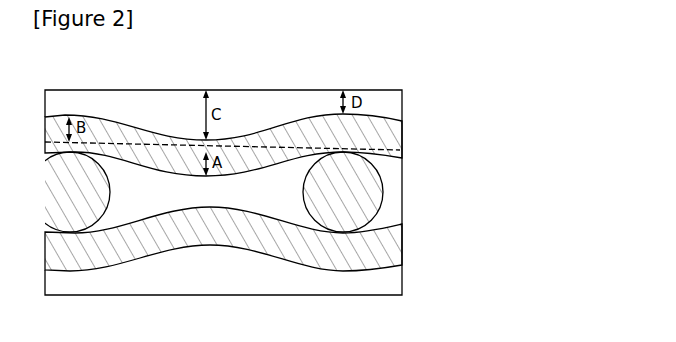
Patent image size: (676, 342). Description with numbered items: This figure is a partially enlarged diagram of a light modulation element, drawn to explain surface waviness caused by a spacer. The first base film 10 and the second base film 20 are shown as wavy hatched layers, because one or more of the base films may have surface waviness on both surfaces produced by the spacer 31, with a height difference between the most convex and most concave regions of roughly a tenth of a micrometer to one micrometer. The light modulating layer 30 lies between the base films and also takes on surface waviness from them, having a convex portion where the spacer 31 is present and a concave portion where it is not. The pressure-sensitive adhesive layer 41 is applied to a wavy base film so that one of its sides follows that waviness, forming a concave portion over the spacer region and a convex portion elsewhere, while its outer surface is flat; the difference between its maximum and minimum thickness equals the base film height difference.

The first base film 10 is at (400, 233).
The second base film 20 is at (400, 139).
The light modulating layer 30 is at (398, 200).
The spacer 31 is at (383, 172).
The pressure-sensitive adhesive layer 41 is at (398, 103).